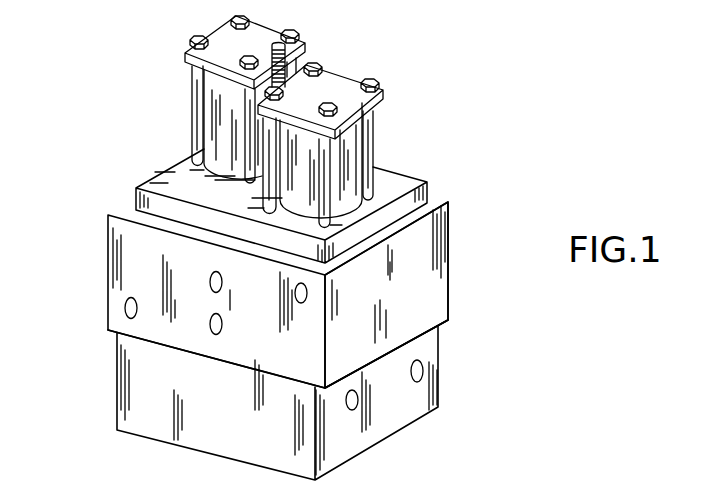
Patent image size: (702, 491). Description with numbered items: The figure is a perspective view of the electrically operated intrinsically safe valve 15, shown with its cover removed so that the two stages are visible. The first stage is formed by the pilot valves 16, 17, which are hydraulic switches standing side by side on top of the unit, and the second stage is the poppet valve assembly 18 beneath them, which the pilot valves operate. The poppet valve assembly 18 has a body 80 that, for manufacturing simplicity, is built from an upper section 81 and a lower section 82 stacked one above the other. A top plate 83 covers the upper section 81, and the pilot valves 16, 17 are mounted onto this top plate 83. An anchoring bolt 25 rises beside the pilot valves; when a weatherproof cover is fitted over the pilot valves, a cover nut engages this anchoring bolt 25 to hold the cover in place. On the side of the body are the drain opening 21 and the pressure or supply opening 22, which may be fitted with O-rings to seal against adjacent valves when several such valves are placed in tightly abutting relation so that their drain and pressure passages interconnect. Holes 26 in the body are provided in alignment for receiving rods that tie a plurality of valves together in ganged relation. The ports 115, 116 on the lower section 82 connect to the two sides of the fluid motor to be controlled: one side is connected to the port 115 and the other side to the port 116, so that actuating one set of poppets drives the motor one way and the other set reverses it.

The electrically operated intrinsically safe valve 15 is at (468, 183).
The pilot valve 16 is at (268, 23).
The pilot valve 17 is at (342, 82).
The poppet valve assembly 18 is at (451, 241).
The drain opening 21 is at (221, 282).
The pressure or supply opening 22 is at (216, 335).
The anchoring bolt 25 is at (288, 50).
The hole 26 is at (125, 315).
The body 80 is at (448, 302).
The upper section 81 is at (420, 278).
The lower section 82 is at (439, 402).
The top plate 83 is at (410, 186).
The port 115 is at (360, 404).
The port 116 is at (421, 371).